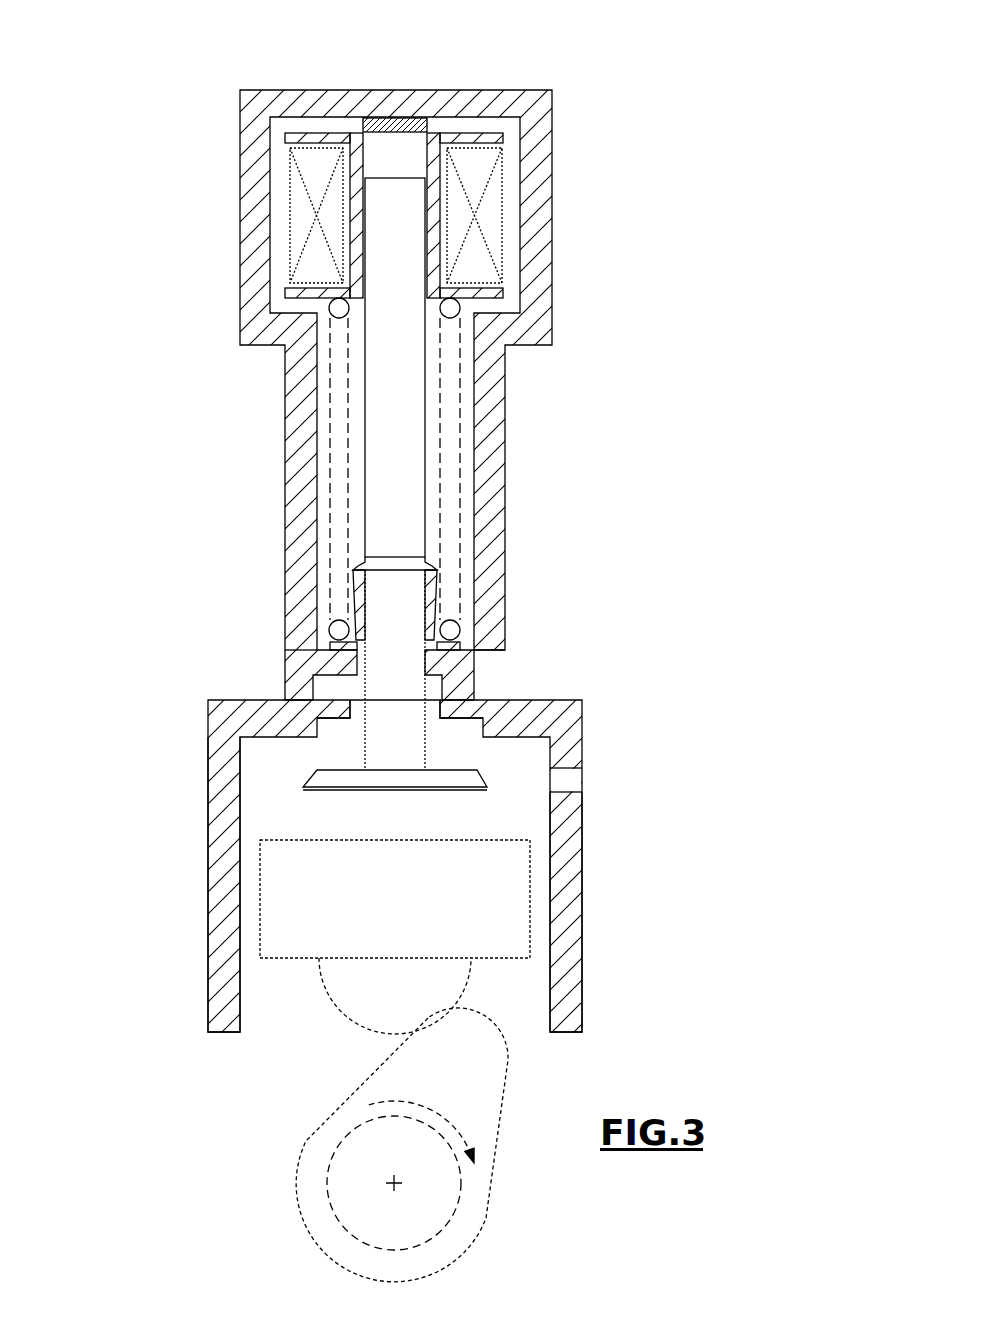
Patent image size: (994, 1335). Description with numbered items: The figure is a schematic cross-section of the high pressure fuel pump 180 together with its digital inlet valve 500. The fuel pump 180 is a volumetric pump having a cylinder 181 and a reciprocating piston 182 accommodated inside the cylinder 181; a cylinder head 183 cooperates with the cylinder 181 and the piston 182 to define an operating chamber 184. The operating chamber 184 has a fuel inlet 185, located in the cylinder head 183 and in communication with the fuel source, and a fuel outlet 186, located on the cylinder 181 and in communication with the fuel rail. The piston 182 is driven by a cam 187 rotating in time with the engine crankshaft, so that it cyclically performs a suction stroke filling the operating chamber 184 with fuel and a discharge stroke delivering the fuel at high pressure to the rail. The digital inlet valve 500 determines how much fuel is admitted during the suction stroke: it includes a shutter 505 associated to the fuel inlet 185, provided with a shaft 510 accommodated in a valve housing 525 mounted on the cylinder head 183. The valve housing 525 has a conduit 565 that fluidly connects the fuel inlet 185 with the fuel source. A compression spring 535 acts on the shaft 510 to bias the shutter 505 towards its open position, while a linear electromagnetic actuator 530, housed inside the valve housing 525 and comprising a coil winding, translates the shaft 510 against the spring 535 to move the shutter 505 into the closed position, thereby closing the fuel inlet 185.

The digital inlet valve 500 is at (222, 88).
The valve housing 525 is at (495, 417).
The linear electromagnetic actuator 530 is at (482, 223).
The shaft 510 is at (400, 445).
The compression spring 535 is at (452, 500).
The conduit 565 is at (322, 688).
The shutter 505 is at (363, 780).
The fuel pump 180 is at (180, 700).
The cylinder head 183 is at (540, 718).
The fuel inlet 185 is at (465, 728).
The operating chamber 184 is at (280, 817).
The fuel outlet 186 is at (567, 780).
The cylinder 181 is at (567, 930).
The piston 182 is at (378, 908).
The cam 187 is at (472, 1108).